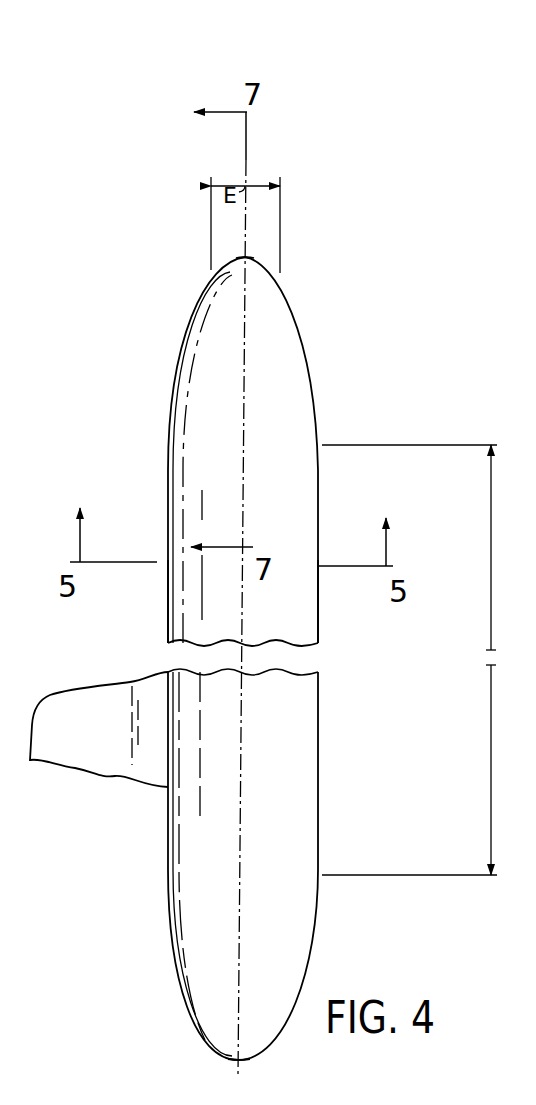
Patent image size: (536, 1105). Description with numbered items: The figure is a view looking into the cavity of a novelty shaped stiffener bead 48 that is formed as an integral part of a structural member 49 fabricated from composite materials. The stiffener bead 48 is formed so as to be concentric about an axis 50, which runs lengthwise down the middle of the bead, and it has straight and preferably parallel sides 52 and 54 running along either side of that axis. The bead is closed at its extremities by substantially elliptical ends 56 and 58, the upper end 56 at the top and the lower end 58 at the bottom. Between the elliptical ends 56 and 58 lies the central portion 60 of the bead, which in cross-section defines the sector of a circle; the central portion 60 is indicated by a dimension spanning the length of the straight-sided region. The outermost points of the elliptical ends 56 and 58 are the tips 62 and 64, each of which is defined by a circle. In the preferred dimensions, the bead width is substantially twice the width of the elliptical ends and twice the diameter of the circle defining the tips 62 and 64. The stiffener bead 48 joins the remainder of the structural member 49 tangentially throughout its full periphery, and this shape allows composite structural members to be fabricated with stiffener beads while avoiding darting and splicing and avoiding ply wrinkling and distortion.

The stiffener bead 48 is at (391, 719).
The structural member 49 is at (105, 749).
The axis 50 is at (242, 785).
The side 52 is at (168, 618).
The side 54 is at (318, 627).
The elliptical end 56 is at (203, 295).
The elliptical end 58 is at (190, 1010).
The central portion 60 is at (491, 531).
The tip 62 is at (247, 258).
The tip 64 is at (241, 1062).